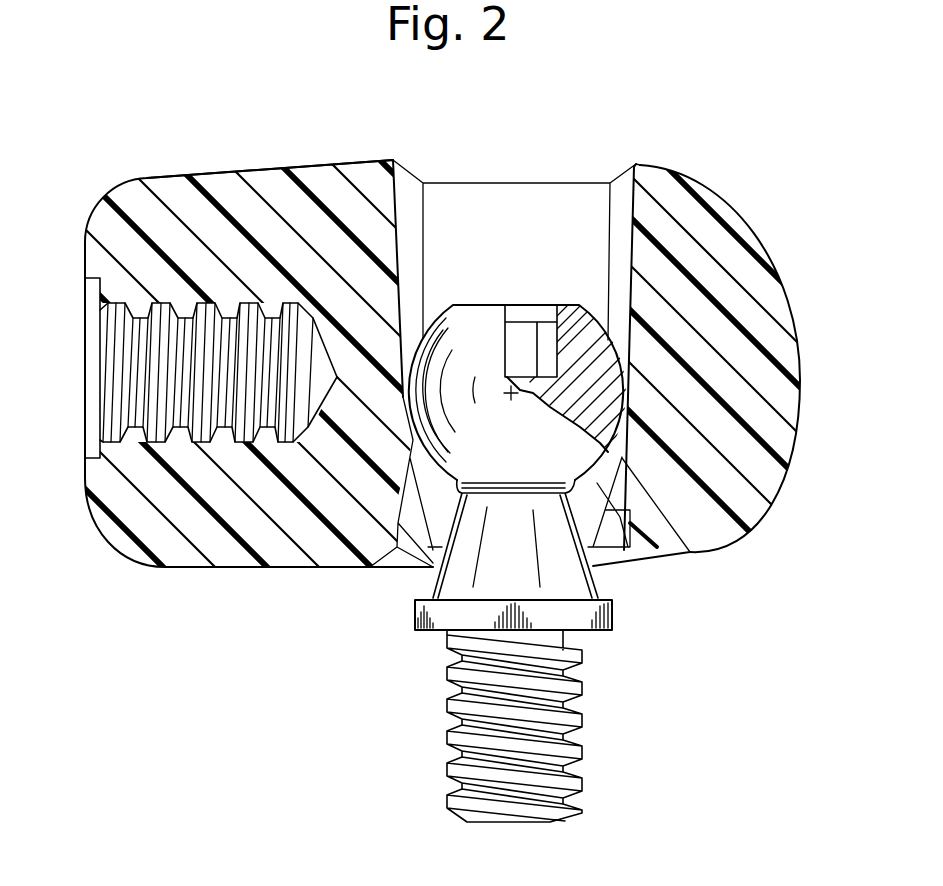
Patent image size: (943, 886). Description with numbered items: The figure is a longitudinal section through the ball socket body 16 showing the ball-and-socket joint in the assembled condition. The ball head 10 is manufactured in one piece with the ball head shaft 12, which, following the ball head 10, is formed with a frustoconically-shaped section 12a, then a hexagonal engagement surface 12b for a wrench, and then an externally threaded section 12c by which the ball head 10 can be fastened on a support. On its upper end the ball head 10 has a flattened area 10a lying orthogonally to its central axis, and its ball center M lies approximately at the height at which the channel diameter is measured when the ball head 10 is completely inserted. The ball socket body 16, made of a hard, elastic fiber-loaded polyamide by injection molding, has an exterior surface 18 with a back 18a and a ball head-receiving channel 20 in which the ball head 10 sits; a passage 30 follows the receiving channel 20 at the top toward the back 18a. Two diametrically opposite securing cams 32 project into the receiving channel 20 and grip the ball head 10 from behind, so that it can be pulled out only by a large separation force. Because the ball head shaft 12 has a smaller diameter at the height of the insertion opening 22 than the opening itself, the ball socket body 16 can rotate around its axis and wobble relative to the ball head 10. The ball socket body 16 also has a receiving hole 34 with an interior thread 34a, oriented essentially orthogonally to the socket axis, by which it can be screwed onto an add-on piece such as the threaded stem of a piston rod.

The ball head 10 is at (484, 318).
The flattened area 10a is at (541, 302).
The ball head shaft 12 is at (583, 576).
The frustoconically-shaped section 12a is at (431, 606).
The hexagonal engagement surface 12b is at (612, 612).
The externally threaded section 12c is at (580, 702).
The ball socket body 16 is at (764, 315).
The exterior surface 18 is at (800, 420).
The back 18a is at (336, 164).
The ball head-receiving channel 20 is at (437, 507).
The insertion opening 22 is at (628, 568).
The passage 30 is at (567, 203).
The securing cams 32 is at (703, 541).
The receiving hole 34 is at (96, 312).
The interior thread 34a is at (132, 404).
The ball center M is at (511, 397).